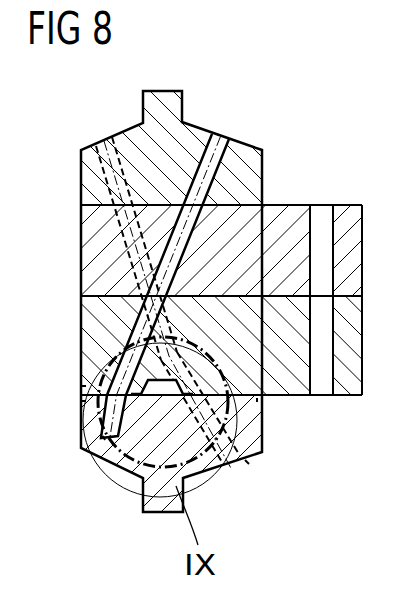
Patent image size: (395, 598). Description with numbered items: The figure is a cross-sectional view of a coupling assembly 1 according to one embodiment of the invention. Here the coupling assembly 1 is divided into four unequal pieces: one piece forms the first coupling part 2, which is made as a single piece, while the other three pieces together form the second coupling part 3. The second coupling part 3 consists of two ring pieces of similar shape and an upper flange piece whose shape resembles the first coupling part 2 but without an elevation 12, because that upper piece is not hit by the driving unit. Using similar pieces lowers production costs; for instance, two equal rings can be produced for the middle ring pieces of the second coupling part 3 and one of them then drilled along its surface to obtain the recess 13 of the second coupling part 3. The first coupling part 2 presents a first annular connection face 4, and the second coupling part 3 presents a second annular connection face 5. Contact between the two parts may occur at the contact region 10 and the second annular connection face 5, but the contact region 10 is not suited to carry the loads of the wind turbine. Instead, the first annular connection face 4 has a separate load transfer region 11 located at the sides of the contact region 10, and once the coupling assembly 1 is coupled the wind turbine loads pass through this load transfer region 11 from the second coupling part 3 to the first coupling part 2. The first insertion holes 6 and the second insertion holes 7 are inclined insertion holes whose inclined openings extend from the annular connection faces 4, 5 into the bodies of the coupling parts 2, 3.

The coupling assembly 1 is at (303, 106).
The first coupling part 2 is at (269, 517).
The second coupling part 3 is at (339, 166).
The first annular connection face 4 is at (82, 401).
The second annular connection face 5 is at (83, 386).
The first insertion holes 6 is at (105, 440).
The second insertion holes 7 is at (230, 138).
The contact region 10 is at (247, 462).
The load transfer region 11 is at (103, 437).
The elevation 12 is at (162, 388).
The recess 13 is at (120, 363).